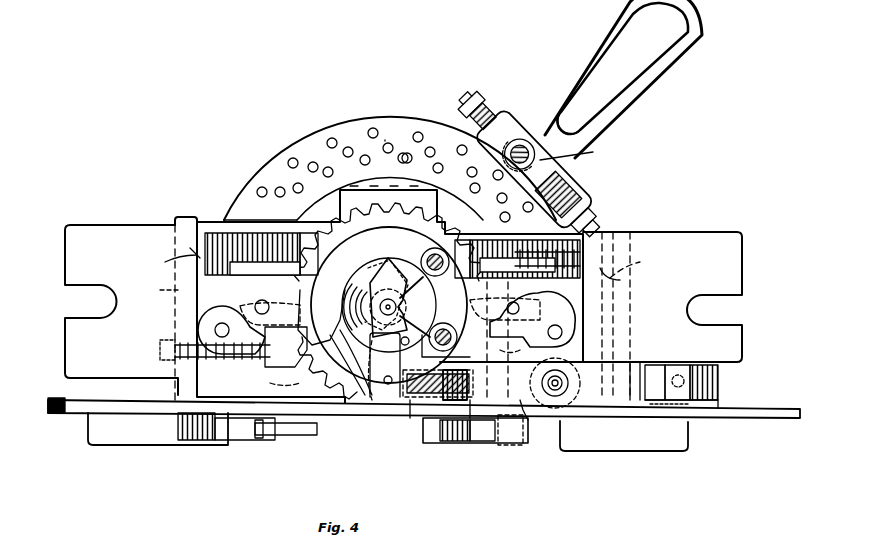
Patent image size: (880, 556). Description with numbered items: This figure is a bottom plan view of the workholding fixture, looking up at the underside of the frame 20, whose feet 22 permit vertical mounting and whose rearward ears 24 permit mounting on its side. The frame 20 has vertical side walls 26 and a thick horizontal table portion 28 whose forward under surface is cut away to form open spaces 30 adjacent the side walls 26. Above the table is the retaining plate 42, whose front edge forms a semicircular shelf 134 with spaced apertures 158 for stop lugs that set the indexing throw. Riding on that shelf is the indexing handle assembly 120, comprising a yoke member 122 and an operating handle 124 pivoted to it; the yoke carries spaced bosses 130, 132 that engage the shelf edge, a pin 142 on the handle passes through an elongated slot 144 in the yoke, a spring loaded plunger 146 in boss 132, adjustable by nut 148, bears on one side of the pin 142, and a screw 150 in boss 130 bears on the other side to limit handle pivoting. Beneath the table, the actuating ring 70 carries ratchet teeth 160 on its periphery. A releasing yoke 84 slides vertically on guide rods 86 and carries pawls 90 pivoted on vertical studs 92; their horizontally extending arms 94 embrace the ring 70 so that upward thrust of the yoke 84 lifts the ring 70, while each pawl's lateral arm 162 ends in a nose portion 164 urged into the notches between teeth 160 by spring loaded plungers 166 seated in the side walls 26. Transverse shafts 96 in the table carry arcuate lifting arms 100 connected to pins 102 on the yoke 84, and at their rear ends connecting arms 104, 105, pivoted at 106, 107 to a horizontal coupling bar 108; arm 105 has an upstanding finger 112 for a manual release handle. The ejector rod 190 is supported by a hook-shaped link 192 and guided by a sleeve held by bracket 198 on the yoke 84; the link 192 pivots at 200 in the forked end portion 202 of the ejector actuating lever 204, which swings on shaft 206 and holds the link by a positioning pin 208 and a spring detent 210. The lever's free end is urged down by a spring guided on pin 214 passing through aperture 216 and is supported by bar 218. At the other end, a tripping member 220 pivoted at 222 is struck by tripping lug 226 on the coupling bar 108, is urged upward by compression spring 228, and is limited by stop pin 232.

The frame 20 is at (199, 208).
The feet 22 is at (80, 230).
The ears 24 is at (160, 447).
The vertical side walls 26 is at (648, 268).
The horizontal table portion 28 is at (230, 385).
The open spaces 30 is at (632, 288).
The retaining plate 42 is at (250, 195).
The actuating ring 70 is at (362, 400).
The releasing yoke 84 is at (376, 252).
The guide rods 86 is at (212, 330).
The pawls 90 is at (225, 290).
The vertical stud 92 is at (512, 315).
The horizontally extending arms 94 is at (302, 305).
The shafts 96 is at (404, 367).
The lifting arm 100 is at (612, 283).
The pins 102 is at (378, 255).
The connecting arm 104 is at (482, 446).
The connecting arm 105 is at (238, 435).
The pivotal connection 106 is at (470, 447).
The pivotal connection 107 is at (205, 440).
The coupling bar 108 is at (412, 412).
The finger 112 is at (295, 432).
The indexing handle assembly 120 is at (530, 110).
The yoke member 122 is at (568, 170).
The operating handle 124 is at (692, 22).
The boss 130 is at (498, 115).
The boss 132 is at (585, 190).
The semicircular shelf 134 is at (408, 139).
The pin 142 is at (563, 125).
The elongated slot 144 is at (579, 152).
The spring loaded plunger 146 is at (535, 168).
The nut 148 is at (595, 214).
The screw 150 is at (462, 106).
The apertures 158 is at (348, 147).
The ratchet teeth 160 is at (330, 236).
The arm 162 is at (358, 372).
The nose portion 164 is at (478, 235).
The spring loaded plungers 166 is at (225, 350).
The ejector rod 190 is at (396, 307).
The hook-shaped link 192 is at (372, 272).
The bracket 198 is at (425, 270).
The pivot 200 is at (388, 385).
The forked end portion 202 is at (398, 358).
The ejector actuating lever 204 is at (522, 447).
The shaft 206 is at (628, 357).
The positioning pin 208 is at (400, 335).
The spring detent 210 is at (425, 405).
The pin 214 is at (567, 380).
The aperture 216 is at (570, 387).
The bar 218 is at (470, 392).
The tripping member 220 is at (695, 405).
The pivot 222 is at (720, 384).
The tripping lug 226 is at (545, 405).
The compression spring 228 is at (672, 410).
The stop pin 232 is at (665, 370).